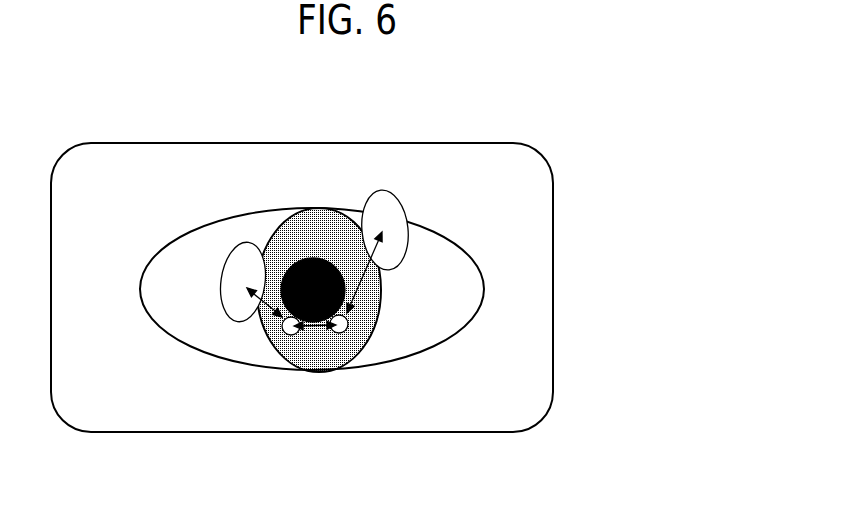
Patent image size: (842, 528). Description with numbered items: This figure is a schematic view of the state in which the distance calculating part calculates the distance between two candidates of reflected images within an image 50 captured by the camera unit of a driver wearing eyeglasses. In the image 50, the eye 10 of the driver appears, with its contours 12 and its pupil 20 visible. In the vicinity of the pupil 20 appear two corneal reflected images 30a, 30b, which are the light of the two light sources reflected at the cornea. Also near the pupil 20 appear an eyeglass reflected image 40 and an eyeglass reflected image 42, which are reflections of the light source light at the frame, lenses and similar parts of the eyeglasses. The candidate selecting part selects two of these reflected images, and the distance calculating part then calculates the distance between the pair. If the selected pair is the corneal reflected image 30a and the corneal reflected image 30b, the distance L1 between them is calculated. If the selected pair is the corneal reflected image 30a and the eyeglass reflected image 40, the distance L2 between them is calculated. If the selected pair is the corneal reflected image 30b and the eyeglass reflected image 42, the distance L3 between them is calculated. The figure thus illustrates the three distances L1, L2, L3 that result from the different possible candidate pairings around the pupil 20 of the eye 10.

The eye 10 is at (483, 312).
The contours 12 is at (213, 222).
The pupil 20 is at (315, 255).
The corneal reflected image 30a is at (346, 331).
The corneal reflected image 30b is at (283, 330).
The eyeglass reflected image 40 is at (408, 227).
The eyeglass reflected image 42 is at (225, 272).
The image 50 is at (313, 432).
The distance L1 is at (315, 341).
The distance L2 is at (357, 272).
The distance L3 is at (257, 320).